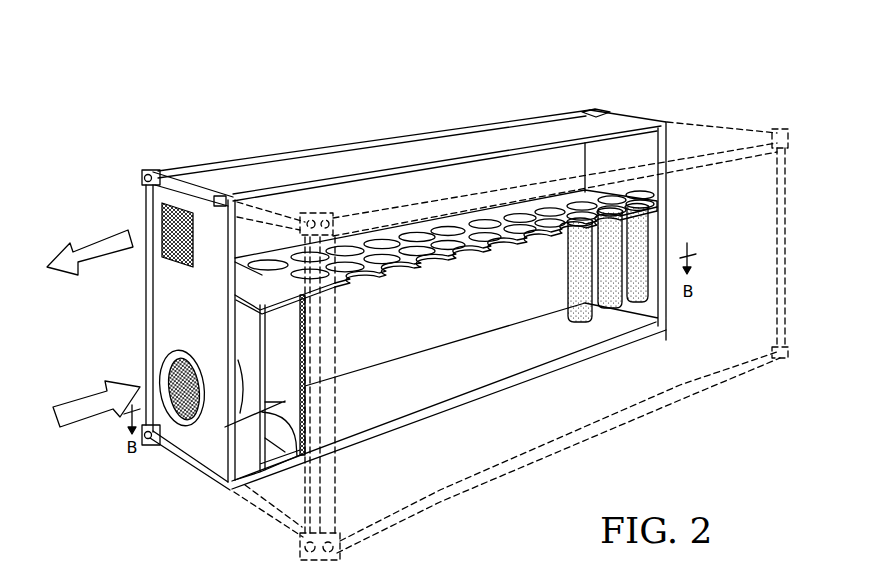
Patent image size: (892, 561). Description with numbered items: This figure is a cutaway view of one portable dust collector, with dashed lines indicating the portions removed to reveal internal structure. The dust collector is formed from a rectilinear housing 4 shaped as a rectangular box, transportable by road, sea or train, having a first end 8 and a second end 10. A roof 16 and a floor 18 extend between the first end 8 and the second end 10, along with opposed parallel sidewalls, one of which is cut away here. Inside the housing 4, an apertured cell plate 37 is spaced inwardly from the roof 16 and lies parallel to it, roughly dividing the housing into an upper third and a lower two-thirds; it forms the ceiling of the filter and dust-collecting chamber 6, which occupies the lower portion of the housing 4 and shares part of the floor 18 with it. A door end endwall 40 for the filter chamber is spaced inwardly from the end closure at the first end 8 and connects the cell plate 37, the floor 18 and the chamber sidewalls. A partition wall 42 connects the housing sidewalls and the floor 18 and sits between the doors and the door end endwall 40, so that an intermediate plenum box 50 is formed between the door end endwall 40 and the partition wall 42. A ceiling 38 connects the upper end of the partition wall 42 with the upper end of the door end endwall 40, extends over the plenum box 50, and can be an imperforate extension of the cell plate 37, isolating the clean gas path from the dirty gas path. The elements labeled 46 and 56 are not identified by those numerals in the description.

The rectilinear housing 4 is at (640, 118).
The filter and dust-collecting chamber 6 is at (425, 310).
The first end 8 is at (133, 337).
The second end 10 is at (667, 235).
The roof 16 is at (418, 152).
The floor 18 is at (433, 393).
The apertured cell plate 37 is at (457, 237).
The ceiling 38 is at (263, 283).
The door end endwall 40 is at (228, 425).
The partition wall 42 is at (293, 457).
The partition panel 46 is at (283, 308).
The intermediate plenum box 50 is at (286, 376).
The filter cartridges 56 is at (590, 270).